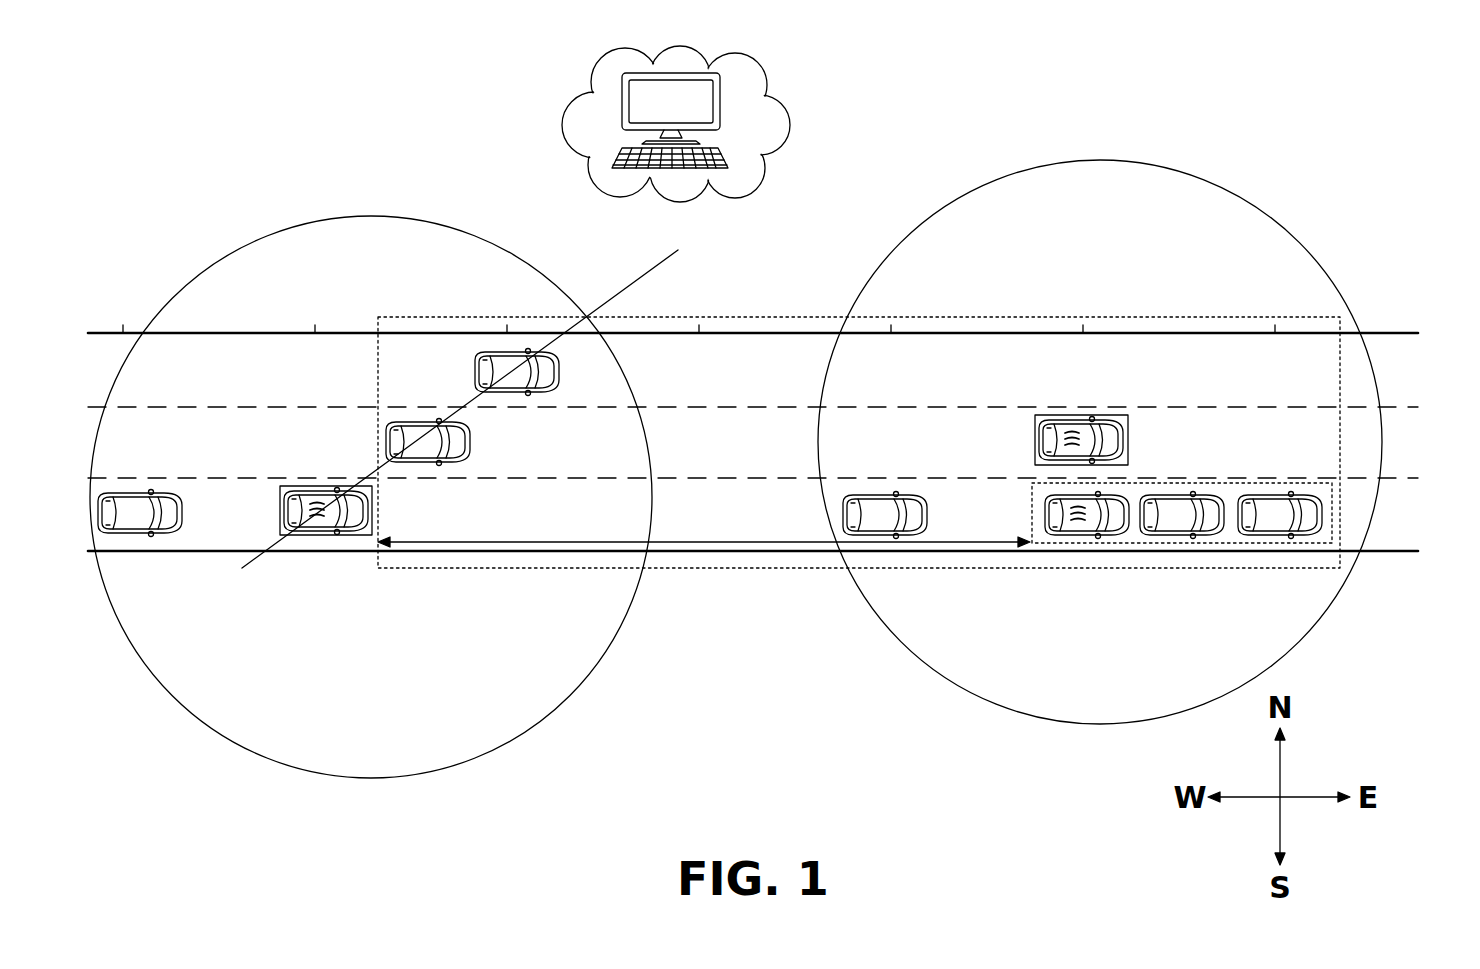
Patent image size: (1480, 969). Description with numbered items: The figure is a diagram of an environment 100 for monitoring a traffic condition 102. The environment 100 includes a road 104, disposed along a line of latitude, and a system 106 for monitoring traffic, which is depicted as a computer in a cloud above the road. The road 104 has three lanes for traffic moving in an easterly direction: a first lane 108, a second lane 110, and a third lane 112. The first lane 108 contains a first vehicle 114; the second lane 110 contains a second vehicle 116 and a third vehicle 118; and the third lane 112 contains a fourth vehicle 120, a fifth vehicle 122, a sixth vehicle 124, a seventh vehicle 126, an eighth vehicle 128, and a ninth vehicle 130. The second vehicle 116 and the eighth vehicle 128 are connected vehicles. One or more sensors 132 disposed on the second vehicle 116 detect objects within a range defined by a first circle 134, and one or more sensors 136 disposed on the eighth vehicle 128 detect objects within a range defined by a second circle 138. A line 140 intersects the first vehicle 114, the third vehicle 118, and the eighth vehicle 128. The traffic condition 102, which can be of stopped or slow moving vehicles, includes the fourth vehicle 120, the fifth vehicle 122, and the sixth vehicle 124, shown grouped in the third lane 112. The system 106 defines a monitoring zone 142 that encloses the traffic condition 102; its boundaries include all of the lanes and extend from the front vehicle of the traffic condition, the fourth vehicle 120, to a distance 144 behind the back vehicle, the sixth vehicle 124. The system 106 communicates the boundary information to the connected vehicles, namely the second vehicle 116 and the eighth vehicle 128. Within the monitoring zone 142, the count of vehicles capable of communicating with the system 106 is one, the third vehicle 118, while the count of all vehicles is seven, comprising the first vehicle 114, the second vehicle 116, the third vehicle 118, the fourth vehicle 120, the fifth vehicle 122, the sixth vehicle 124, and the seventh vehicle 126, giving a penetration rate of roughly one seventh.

The environment 100 is at (156, 49).
The traffic condition 102 is at (1317, 544).
The road 104 is at (164, 210).
The system for monitoring traffic 106 is at (790, 93).
The first lane 108 is at (1386, 378).
The second lane 110 is at (1386, 450).
The third lane 112 is at (1386, 528).
The first vehicle 114 is at (545, 380).
The second vehicle 116 is at (1055, 433).
The third vehicle 118 is at (414, 438).
The fourth vehicle 120 is at (1272, 522).
The fifth vehicle 122 is at (1172, 522).
The sixth vehicle 124 is at (1072, 522).
The seventh vehicle 126 is at (878, 508).
The eighth vehicle 128 is at (311, 523).
The ninth vehicle 130 is at (133, 535).
The sensors 132 is at (1113, 415).
The first circle 134 is at (1097, 160).
The sensors 136 is at (364, 538).
The second circle 138 is at (388, 216).
The line 140 is at (623, 293).
The monitoring zone 142 is at (790, 315).
The distance 144 is at (683, 540).